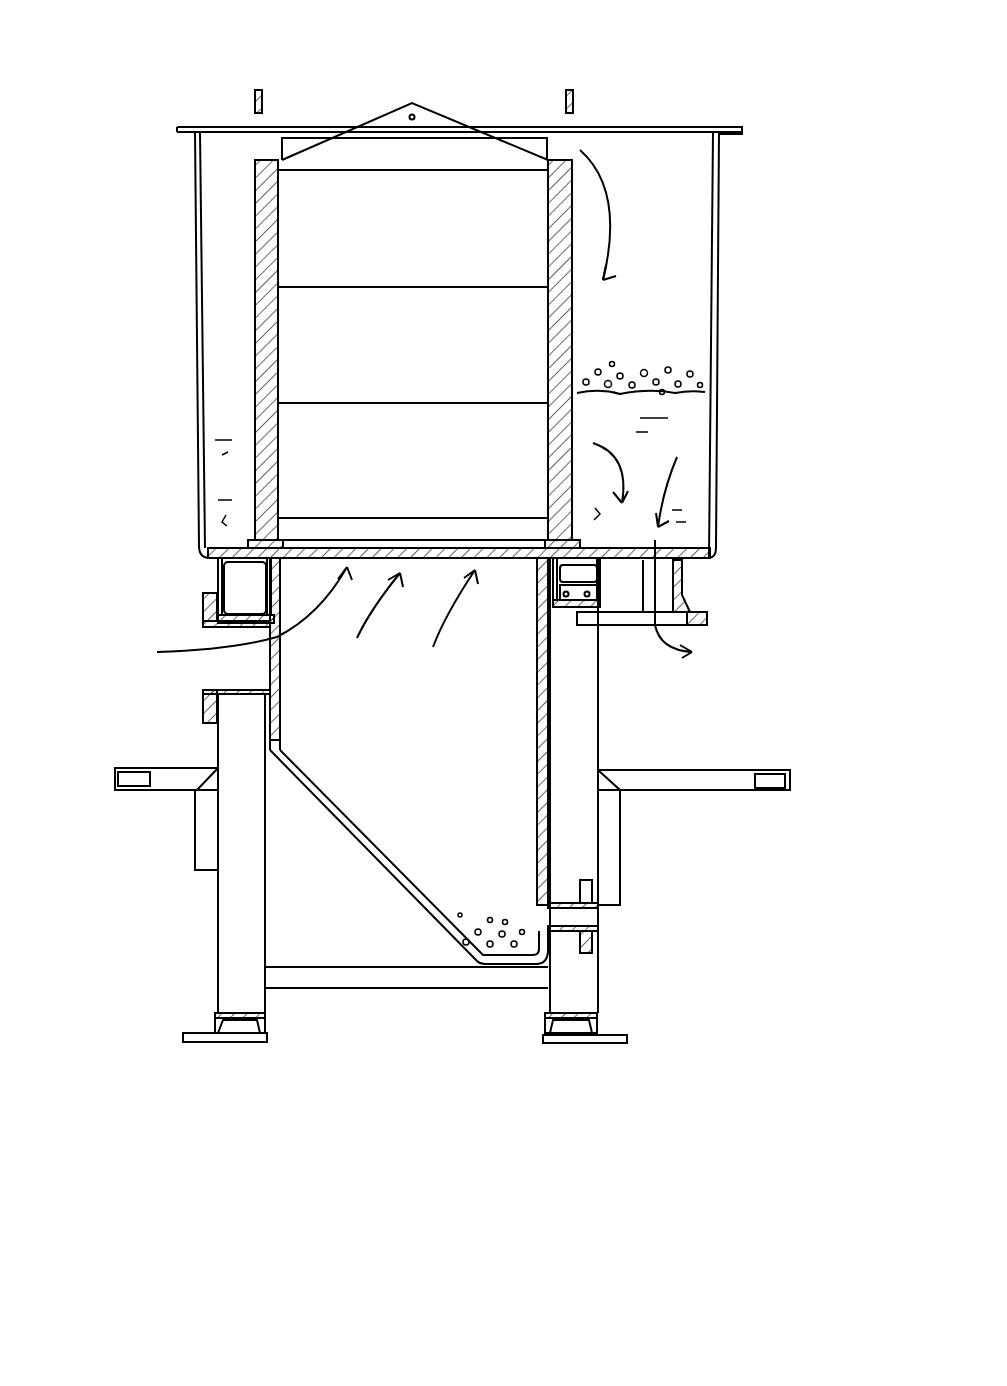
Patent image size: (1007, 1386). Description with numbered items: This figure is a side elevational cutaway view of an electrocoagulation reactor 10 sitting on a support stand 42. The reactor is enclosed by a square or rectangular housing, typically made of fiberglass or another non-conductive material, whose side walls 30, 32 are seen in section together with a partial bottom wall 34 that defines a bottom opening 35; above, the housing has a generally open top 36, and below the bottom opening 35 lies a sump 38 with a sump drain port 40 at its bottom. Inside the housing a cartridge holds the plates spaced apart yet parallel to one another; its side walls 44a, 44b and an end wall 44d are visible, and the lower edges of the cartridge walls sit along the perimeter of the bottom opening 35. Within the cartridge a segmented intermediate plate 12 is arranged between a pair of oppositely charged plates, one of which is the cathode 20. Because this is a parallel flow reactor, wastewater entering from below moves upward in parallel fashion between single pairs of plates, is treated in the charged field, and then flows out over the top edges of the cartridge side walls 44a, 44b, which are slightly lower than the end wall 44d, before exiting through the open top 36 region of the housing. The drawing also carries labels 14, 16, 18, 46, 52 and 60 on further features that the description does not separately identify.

The electrocoagulation reactor 10 is at (770, 48).
The segmented intermediate plate 12 is at (510, 197).
The lower tray compartment 14 is at (418, 476).
The middle tray compartment 16 is at (428, 368).
The upper tray compartment 18 is at (430, 254).
The cathode 20 is at (426, 287).
The side wall 30 is at (718, 282).
The side wall 32 is at (192, 298).
The partial bottom wall 34 is at (215, 555).
The bottom opening 35 is at (495, 553).
The open top 36 is at (658, 142).
The sump 38 is at (450, 769).
The sump drain port 40 is at (580, 917).
The support stand 42 is at (203, 913).
The cartridge side wall 44a is at (575, 320).
The cartridge side wall 44b is at (257, 260).
The cartridge end wall 44d is at (293, 143).
The guide pins 46 is at (576, 91).
The outlet 52 is at (673, 590).
The pellets 60 is at (224, 458).